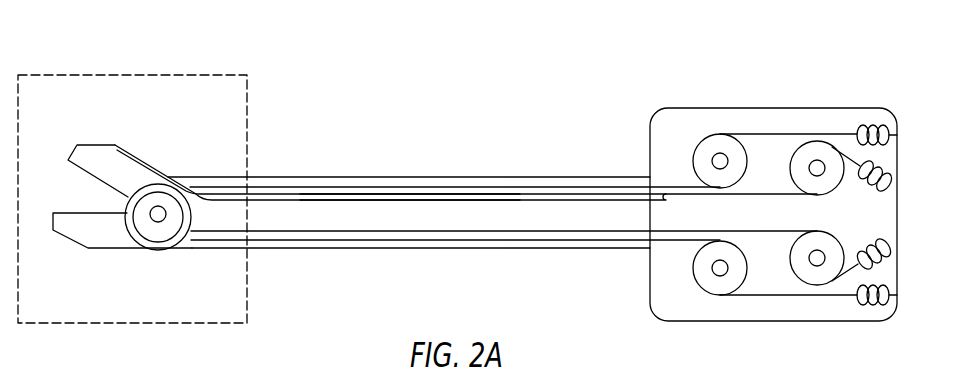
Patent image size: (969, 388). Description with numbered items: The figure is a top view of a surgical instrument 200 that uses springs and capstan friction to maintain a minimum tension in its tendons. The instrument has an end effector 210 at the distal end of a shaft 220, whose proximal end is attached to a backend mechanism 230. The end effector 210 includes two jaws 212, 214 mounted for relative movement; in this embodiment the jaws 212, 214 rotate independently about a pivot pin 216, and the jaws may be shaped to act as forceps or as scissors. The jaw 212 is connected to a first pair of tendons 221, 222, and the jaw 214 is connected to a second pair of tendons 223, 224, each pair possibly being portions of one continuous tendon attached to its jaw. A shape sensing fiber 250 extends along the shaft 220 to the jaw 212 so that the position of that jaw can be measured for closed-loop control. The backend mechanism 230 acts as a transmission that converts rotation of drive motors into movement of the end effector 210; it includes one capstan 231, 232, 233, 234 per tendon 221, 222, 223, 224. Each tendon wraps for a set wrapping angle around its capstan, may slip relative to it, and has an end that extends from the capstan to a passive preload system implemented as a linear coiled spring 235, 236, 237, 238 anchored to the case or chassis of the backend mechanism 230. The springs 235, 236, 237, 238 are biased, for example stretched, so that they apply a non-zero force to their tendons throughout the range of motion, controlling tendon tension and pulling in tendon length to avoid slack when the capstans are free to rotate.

The surgical instrument 200 is at (513, 50).
The end effector 210 is at (210, 140).
The jaw 212 is at (98, 143).
The jaw 214 is at (115, 250).
The pivot pin 216 is at (163, 217).
The shaft 220 is at (492, 217).
The tendon 221 is at (342, 187).
The tendon 222 is at (343, 241).
The tendon 223 is at (473, 195).
The tendon 224 is at (473, 233).
The shape sensing fiber 250 is at (385, 202).
The backend mechanism 230 is at (788, 226).
The capstan 231 is at (702, 162).
The capstan 232 is at (702, 268).
The capstan 233 is at (792, 176).
The capstan 234 is at (790, 256).
The linear coiled spring 235 is at (873, 124).
The linear coiled spring 236 is at (873, 305).
The linear coiled spring 237 is at (890, 186).
The linear coiled spring 238 is at (884, 242).